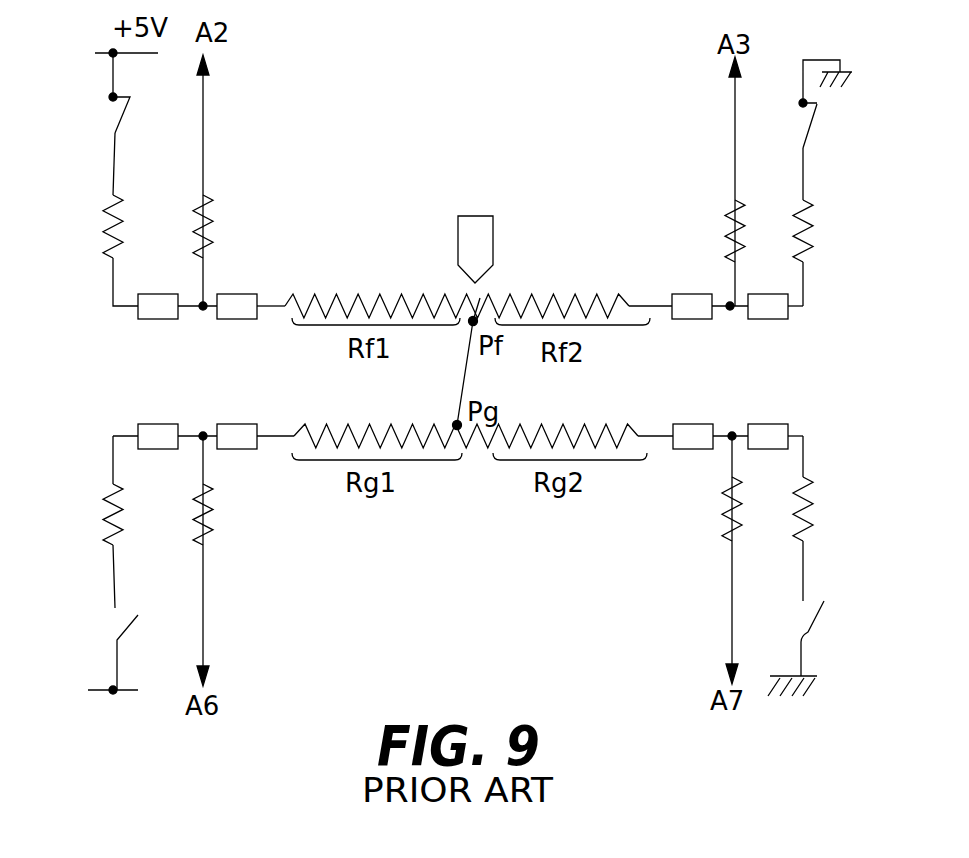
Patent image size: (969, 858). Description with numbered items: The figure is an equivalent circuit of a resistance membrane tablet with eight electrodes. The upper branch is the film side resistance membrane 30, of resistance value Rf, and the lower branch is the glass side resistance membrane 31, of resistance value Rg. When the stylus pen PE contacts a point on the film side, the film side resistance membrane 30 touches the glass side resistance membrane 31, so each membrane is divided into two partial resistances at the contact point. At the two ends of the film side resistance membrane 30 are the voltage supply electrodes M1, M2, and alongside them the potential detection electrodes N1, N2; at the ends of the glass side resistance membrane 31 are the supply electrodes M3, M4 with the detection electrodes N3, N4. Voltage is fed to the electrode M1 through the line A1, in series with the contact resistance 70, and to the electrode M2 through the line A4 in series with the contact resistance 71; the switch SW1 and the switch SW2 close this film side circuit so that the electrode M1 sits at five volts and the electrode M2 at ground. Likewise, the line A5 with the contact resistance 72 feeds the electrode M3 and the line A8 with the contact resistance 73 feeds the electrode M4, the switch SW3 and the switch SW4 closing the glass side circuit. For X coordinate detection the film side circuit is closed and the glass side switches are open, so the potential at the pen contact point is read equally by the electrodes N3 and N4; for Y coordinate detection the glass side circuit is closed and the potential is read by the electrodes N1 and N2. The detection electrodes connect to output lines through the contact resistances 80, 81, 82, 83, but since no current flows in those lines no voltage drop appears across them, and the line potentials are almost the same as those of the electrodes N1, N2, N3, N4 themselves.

The contact resistance 70 is at (110, 235).
The contact resistance 71 is at (810, 233).
The contact resistance 72 is at (122, 507).
The contact resistance 73 is at (847, 505).
The contact resistance 80 is at (205, 218).
The contact resistance 81 is at (718, 232).
The contact resistance 82 is at (207, 492).
The contact resistance 83 is at (718, 522).
The film side resistance membrane 30 is at (422, 288).
The glass side resistance membrane 31 is at (478, 458).
The switch SW1 is at (113, 107).
The switch SW2 is at (817, 107).
The switch SW3 is at (137, 615).
The switch SW4 is at (812, 627).
The line A1 is at (113, 163).
The line A4 is at (807, 163).
The line A5 is at (117, 578).
The line A8 is at (807, 578).
The electrode M1 is at (155, 312).
The electrode M2 is at (772, 313).
The electrode M3 is at (153, 437).
The electrode M4 is at (762, 425).
The electrode N1 is at (235, 312).
The electrode N2 is at (695, 313).
The electrode N3 is at (235, 437).
The electrode N4 is at (698, 440).
The stylus pen PE is at (493, 240).